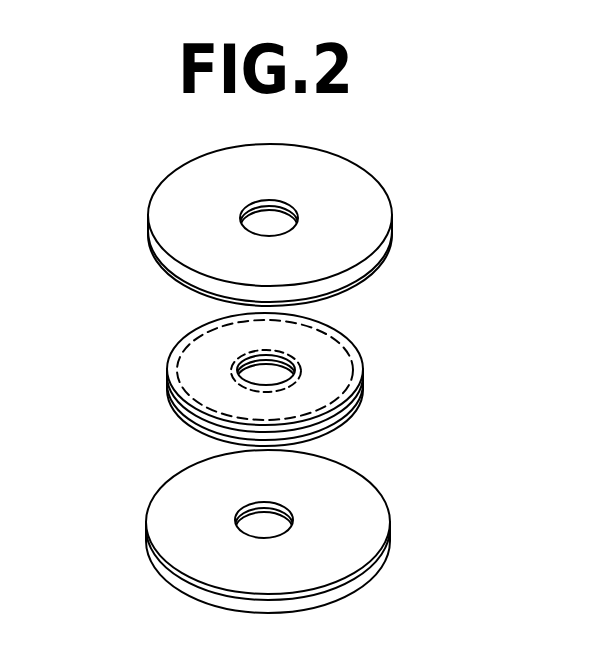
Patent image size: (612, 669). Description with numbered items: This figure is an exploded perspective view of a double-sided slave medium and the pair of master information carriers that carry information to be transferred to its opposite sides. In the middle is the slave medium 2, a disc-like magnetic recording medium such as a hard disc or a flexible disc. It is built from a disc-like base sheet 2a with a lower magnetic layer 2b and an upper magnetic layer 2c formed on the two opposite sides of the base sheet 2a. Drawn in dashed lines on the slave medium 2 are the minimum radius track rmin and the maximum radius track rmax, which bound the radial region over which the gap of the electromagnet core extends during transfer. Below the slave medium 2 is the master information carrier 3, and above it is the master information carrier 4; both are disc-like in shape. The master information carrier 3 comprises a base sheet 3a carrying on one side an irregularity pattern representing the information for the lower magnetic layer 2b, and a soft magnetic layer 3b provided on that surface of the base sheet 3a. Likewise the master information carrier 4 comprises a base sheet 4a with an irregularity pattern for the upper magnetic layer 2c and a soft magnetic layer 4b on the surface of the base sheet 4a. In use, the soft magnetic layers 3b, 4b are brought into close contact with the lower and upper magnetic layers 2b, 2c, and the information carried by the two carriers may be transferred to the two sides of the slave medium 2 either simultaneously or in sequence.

The slave medium 2 is at (272, 373).
The base sheet 2a is at (170, 403).
The lower magnetic layer 2b is at (175, 415).
The upper magnetic layer 2c is at (170, 383).
The master information carrier 3 is at (255, 531).
The base sheet 3a is at (153, 572).
The soft magnetic layer 3b is at (150, 546).
The master information carrier 4 is at (255, 225).
The base sheet 4a is at (152, 238).
The soft magnetic layer 4b is at (156, 264).
The minimum radius track rmin is at (297, 360).
The maximum radius track rmax is at (352, 355).